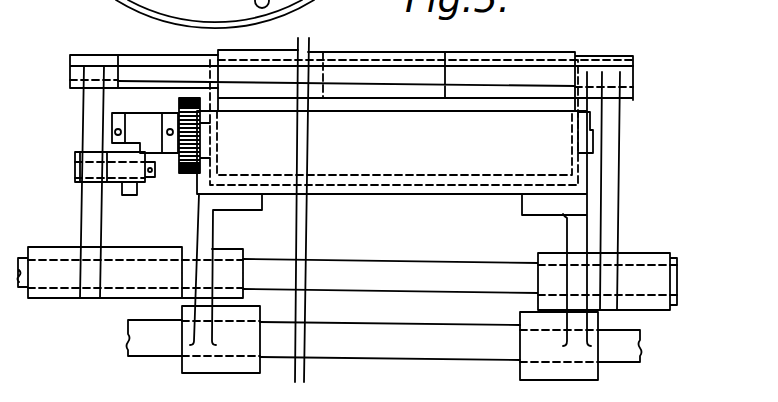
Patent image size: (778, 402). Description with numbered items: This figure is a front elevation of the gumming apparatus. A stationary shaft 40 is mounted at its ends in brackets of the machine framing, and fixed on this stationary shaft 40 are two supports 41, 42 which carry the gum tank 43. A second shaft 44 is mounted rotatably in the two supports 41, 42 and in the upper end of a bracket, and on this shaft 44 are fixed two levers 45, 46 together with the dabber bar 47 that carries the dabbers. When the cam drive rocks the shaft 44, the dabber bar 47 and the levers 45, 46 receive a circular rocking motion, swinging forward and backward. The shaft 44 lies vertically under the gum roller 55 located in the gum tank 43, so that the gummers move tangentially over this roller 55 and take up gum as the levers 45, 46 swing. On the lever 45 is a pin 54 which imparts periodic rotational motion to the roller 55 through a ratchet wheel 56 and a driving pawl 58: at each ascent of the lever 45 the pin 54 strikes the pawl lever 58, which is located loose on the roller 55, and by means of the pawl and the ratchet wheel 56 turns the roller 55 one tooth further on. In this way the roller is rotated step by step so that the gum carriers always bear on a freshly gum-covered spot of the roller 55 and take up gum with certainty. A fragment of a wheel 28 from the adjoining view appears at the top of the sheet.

The wheel 28 is at (229, 14).
The stationary shaft 40 is at (403, 353).
The support 41 is at (225, 363).
The support 42 is at (572, 370).
The gum tank 43 is at (354, 187).
The shaft 44 is at (419, 267).
The lever 45 is at (90, 107).
The lever 46 is at (612, 192).
The dabber bar 47 is at (133, 57).
The pin 54 is at (75, 165).
The roller 55 is at (283, 153).
The ratchet wheel 56 is at (188, 97).
The driving pawl 58 is at (148, 121).